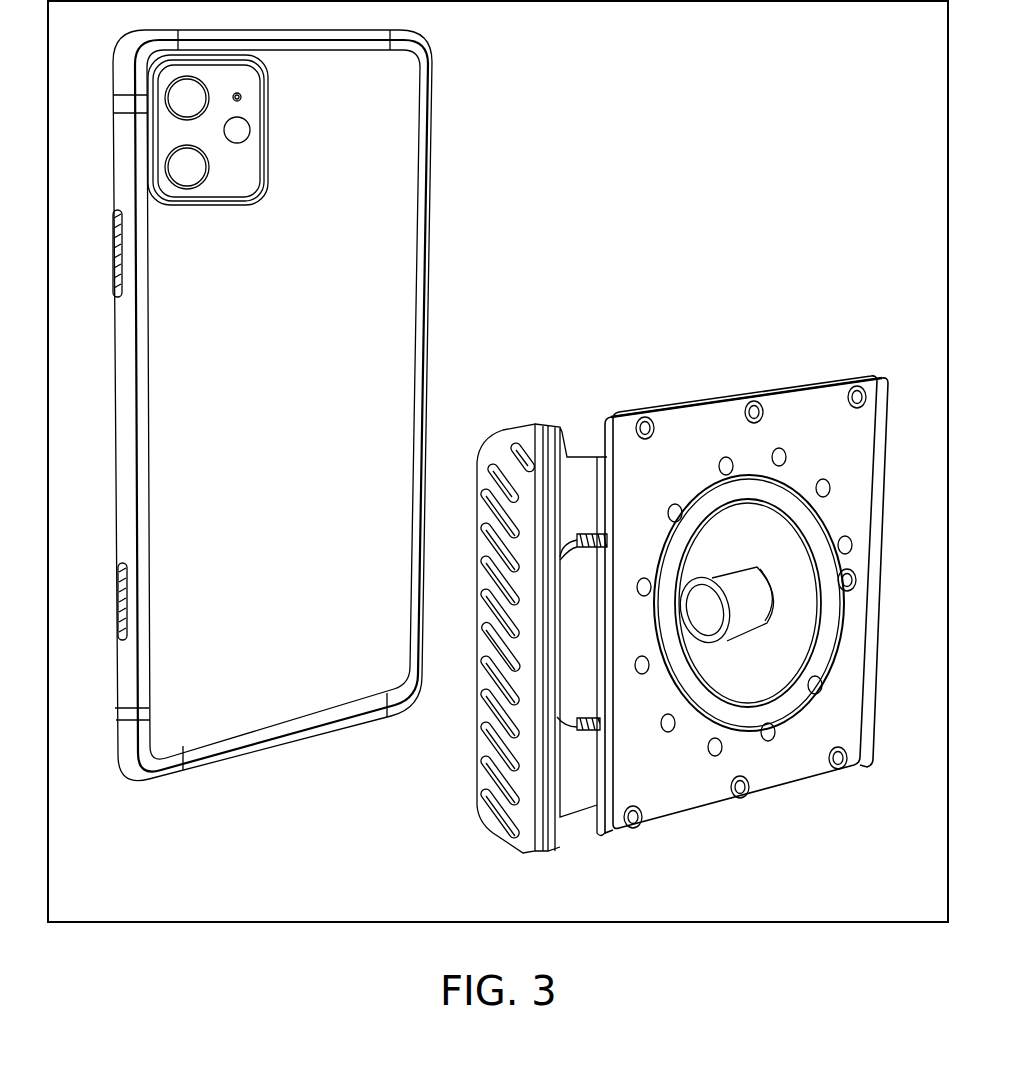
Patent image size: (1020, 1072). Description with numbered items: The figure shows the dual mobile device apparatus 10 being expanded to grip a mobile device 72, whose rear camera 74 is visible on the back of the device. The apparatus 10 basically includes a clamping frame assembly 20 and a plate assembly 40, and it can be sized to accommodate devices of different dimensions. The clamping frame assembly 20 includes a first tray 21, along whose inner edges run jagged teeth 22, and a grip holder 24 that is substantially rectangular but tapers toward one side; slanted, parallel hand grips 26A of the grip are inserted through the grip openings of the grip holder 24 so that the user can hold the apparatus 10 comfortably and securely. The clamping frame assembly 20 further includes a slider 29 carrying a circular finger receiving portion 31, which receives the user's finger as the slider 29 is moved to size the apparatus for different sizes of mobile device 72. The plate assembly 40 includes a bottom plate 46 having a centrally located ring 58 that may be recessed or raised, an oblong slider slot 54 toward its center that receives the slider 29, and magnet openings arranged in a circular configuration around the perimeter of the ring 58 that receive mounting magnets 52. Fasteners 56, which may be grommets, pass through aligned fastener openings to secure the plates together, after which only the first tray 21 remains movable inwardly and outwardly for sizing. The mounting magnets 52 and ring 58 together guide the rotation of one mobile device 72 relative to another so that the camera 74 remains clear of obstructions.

The dual mobile device apparatus 10 is at (828, 288).
The clamping frame assembly 20 is at (505, 619).
The first tray 21 is at (580, 810).
The teeth 22 is at (577, 717).
The grip holder 24 is at (503, 827).
The hand grips 26A is at (503, 783).
The slider 29 is at (781, 722).
The finger receiving portion 31 is at (713, 617).
The plate assembly 40 is at (771, 592).
The bottom plate 46 is at (857, 464).
The mounting magnets 52 is at (780, 447).
The slider slot 54 is at (750, 608).
The fasteners 56 is at (837, 767).
The ring 58 is at (752, 715).
The mobile device 72 is at (163, 402).
The camera 74 is at (173, 133).